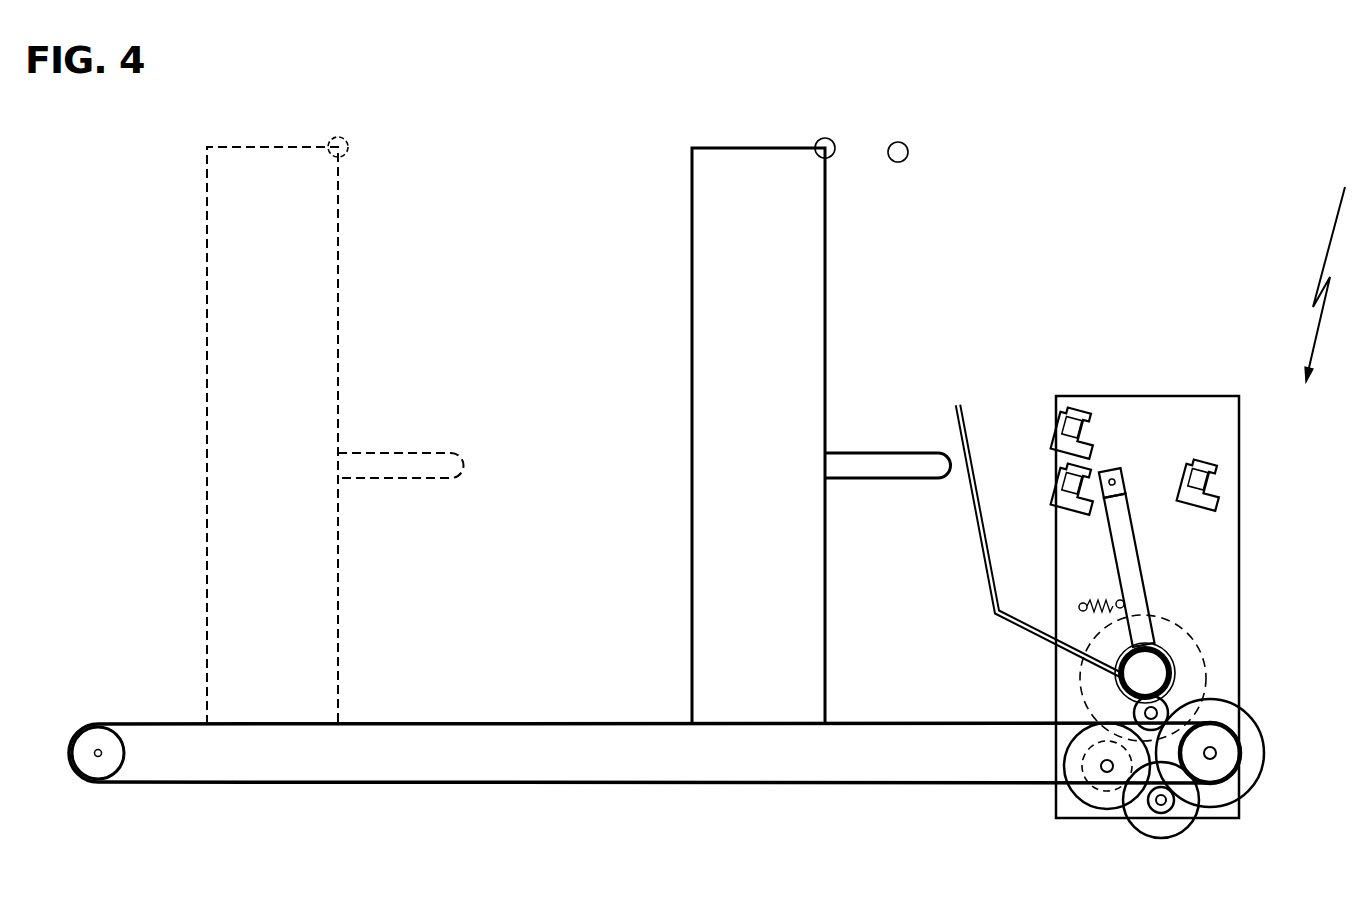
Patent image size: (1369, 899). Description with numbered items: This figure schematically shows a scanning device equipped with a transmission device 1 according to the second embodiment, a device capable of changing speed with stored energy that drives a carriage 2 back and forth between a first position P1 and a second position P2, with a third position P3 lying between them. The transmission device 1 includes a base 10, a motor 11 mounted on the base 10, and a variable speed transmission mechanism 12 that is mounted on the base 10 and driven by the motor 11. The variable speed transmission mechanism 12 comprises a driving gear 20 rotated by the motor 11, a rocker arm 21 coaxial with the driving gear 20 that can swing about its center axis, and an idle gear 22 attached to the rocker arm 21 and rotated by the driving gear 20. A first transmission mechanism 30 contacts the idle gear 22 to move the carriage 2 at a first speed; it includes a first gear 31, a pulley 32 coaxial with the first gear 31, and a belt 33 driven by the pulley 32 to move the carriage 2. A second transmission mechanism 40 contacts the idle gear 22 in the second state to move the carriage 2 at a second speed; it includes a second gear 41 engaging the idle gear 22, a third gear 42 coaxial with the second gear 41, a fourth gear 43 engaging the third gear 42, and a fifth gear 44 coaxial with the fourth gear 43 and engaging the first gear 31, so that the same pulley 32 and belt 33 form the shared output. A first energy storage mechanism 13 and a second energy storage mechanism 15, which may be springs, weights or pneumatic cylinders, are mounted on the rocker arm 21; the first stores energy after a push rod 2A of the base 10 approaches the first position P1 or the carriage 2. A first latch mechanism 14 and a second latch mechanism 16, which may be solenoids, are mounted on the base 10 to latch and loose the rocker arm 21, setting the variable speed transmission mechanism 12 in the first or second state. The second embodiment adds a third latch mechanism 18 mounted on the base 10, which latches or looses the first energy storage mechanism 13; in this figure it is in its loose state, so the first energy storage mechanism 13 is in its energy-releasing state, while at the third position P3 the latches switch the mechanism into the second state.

The transmission device 1 is at (1327, 266).
The carriage 2 is at (207, 330).
The push rod 2A is at (893, 458).
The base 10 is at (1240, 558).
The motor 11 is at (1085, 684).
The variable speed transmission mechanism 12 is at (107, 256).
The first energy storage mechanism 13 is at (995, 606).
The first latch mechanism 14 is at (1062, 470).
The second energy storage mechanism 15 is at (1082, 600).
The second latch mechanism 16 is at (1231, 474).
The third latch mechanism 18 is at (1100, 425).
The driving gear 20 is at (1174, 670).
The rocker arm 21 is at (1176, 624).
The idle gear 22 is at (1170, 705).
The first transmission mechanism 30 is at (568, 222).
The first gear 31 is at (1261, 772).
The pulley 32 is at (1235, 727).
The belt 33 is at (886, 785).
The second transmission mechanism 40 is at (1156, 270).
The second gear 41 is at (1072, 812).
The third gear 42 is at (1104, 792).
The fourth gear 43 is at (1134, 828).
The fifth gear 44 is at (1164, 806).
The first position P1 is at (908, 156).
The second position P2 is at (349, 151).
The third position P3 is at (831, 154).